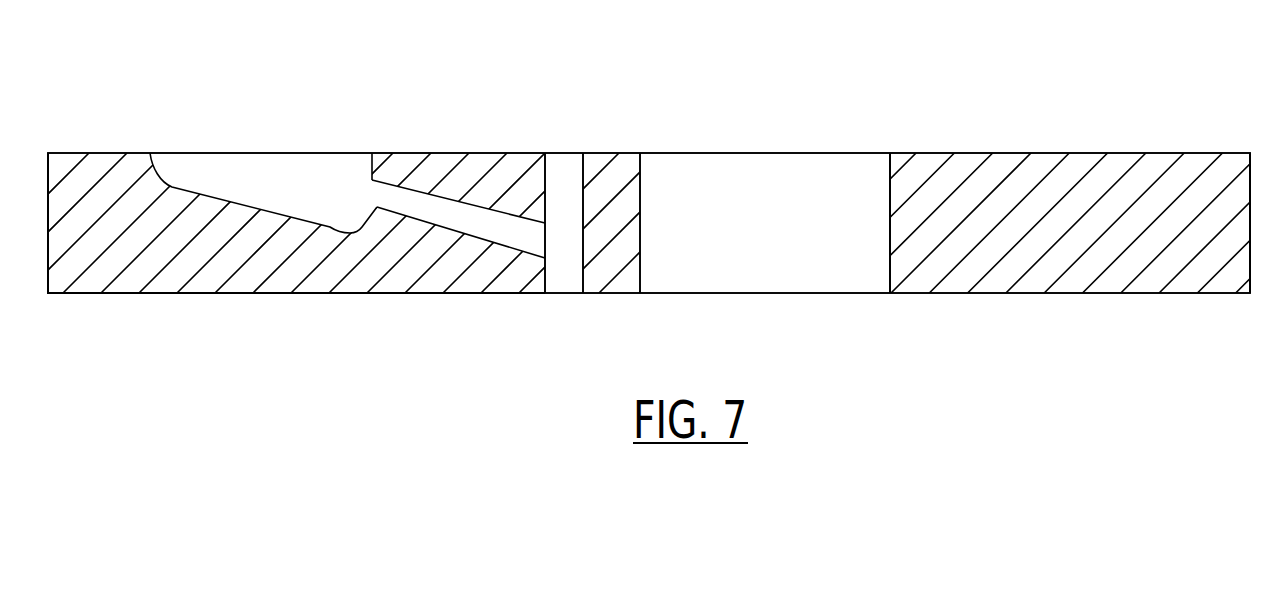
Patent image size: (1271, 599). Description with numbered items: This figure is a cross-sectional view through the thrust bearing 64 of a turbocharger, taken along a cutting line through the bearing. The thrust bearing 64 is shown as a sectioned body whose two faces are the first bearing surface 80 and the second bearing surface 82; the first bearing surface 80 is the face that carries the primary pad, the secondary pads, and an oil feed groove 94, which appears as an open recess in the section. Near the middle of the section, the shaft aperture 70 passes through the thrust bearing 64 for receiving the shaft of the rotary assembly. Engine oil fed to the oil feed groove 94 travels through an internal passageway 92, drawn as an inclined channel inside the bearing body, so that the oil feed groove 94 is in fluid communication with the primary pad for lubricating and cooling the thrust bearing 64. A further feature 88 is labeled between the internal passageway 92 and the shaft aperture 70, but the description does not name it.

The thrust bearing 64 is at (1180, 80).
The shaft aperture 70 is at (777, 182).
The first bearing surface 80 is at (428, 157).
The second bearing surface 82 is at (328, 293).
The slot 88 is at (583, 182).
The internal passageway 92 is at (437, 198).
The oil feed groove 94 is at (220, 178).